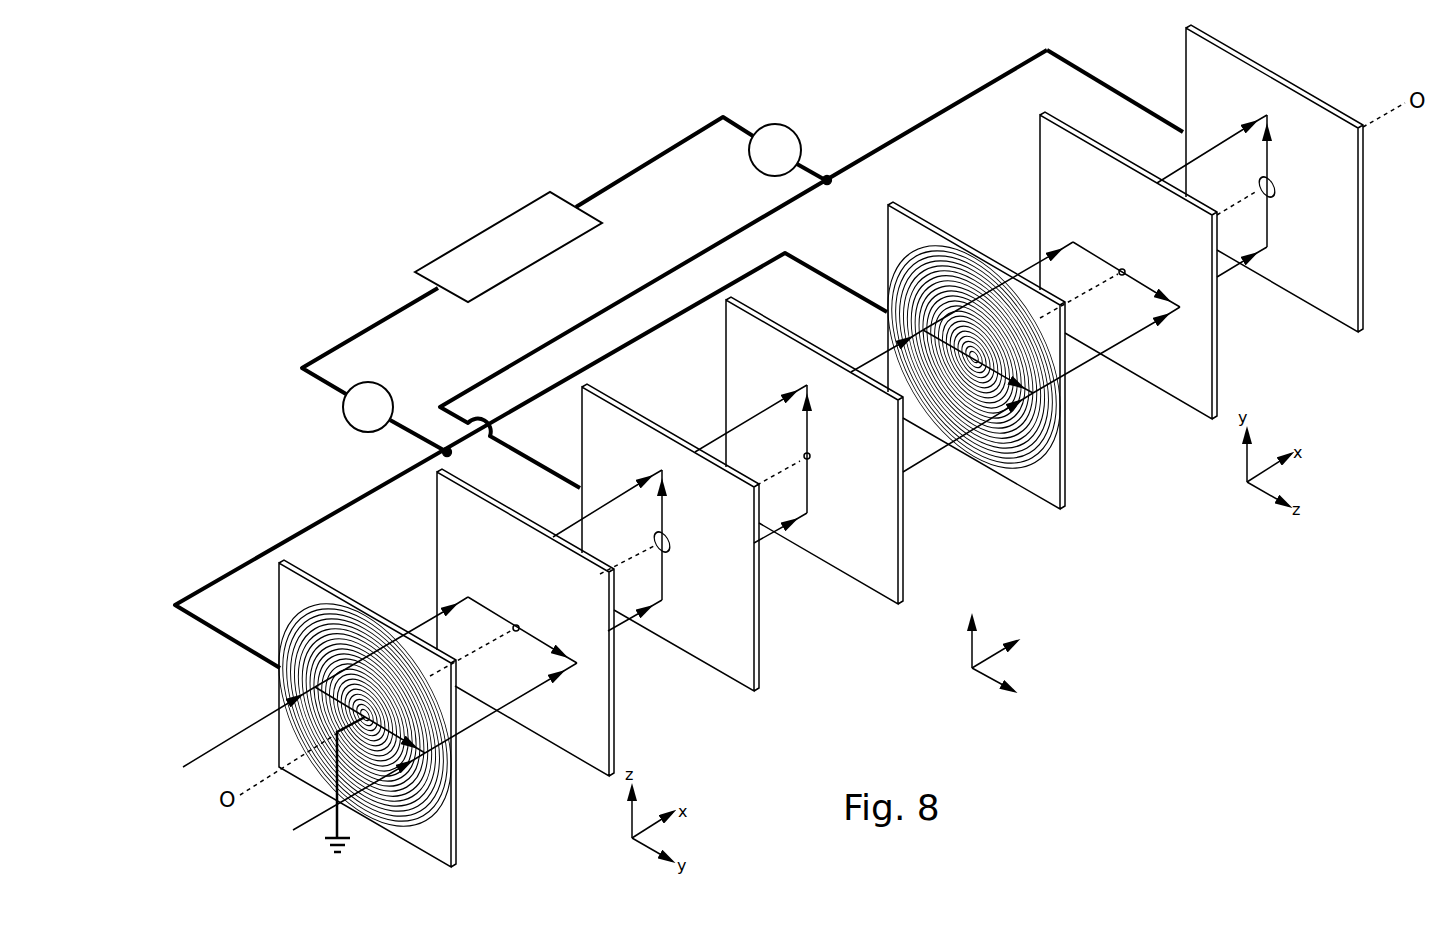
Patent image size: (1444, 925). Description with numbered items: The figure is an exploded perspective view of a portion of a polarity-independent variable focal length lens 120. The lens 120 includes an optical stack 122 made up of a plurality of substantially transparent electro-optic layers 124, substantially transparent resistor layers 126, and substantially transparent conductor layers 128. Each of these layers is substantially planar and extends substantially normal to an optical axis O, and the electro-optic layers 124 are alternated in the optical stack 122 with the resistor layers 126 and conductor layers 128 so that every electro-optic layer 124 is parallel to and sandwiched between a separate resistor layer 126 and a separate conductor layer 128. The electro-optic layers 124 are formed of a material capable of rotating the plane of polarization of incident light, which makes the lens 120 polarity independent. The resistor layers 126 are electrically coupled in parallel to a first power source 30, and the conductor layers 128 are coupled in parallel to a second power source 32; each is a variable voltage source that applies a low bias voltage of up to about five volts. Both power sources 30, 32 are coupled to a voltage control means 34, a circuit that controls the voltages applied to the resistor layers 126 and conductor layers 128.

The variable focal length lens 120 is at (318, 291).
The optical stack 122 is at (892, 690).
The electro-optic layer 124 is at (1213, 420).
The resistor layer 126 is at (1062, 510).
The conductor layer 128 is at (1358, 333).
The first power source 30 is at (345, 416).
The second power source 32 is at (800, 130).
The voltage control means 34 is at (460, 240).